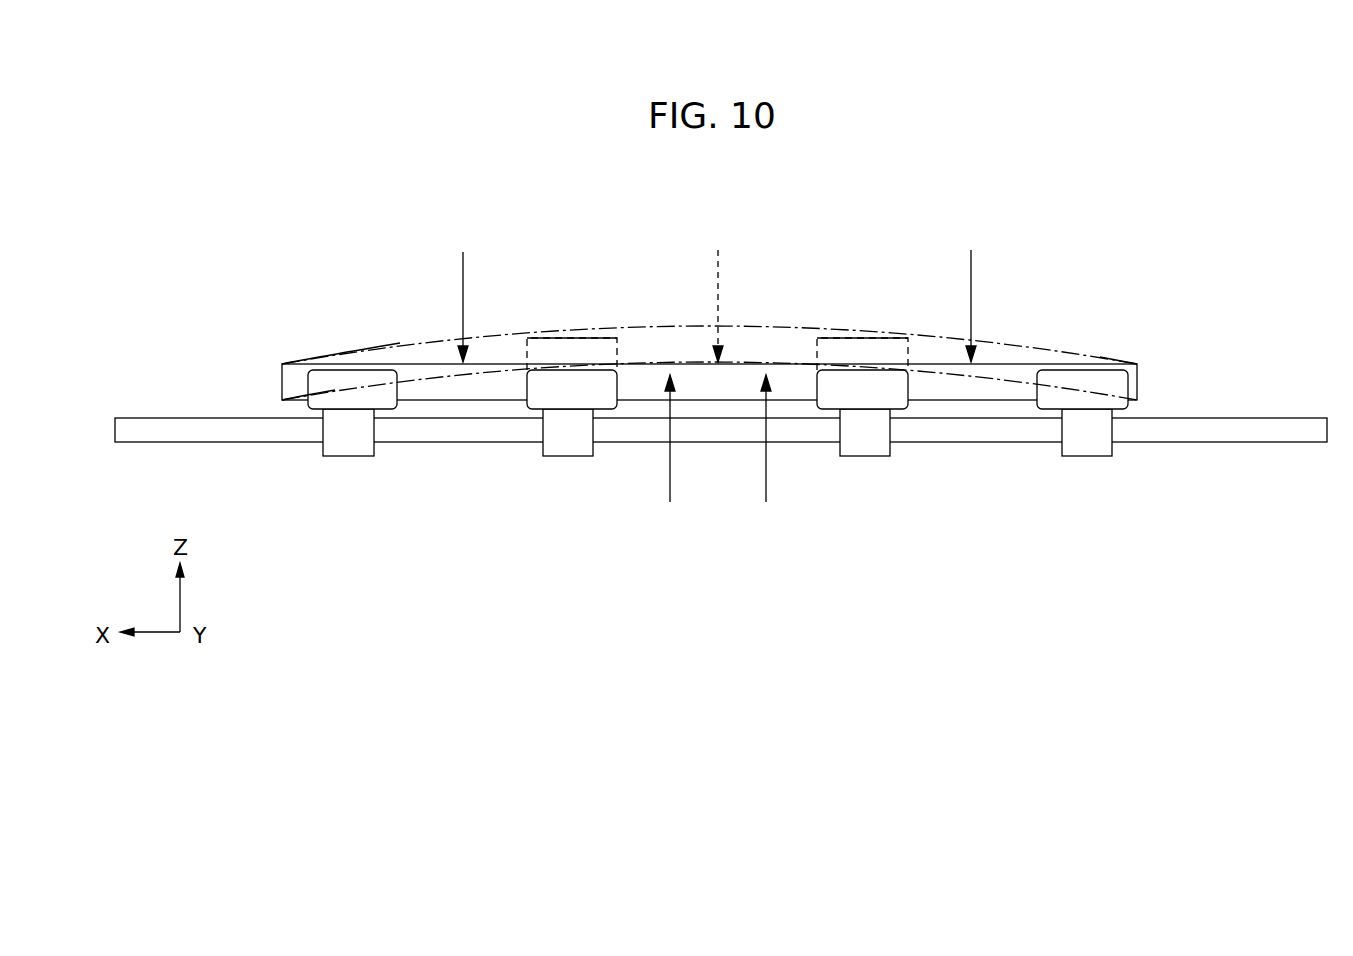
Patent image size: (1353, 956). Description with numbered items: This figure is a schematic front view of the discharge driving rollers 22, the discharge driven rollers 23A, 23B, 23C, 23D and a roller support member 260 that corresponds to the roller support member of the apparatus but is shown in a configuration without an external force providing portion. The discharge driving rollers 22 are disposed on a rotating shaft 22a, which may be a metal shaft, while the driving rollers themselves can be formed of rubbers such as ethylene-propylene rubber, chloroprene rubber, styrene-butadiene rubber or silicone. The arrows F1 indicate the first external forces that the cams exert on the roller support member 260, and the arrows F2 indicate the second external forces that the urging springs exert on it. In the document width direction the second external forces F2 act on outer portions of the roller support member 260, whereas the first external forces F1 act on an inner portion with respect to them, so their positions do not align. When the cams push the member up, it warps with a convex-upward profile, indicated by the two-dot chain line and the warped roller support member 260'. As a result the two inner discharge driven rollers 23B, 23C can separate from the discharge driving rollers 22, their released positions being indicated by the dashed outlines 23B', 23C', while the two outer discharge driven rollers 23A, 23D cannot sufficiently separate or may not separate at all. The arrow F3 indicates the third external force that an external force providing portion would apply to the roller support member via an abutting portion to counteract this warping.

The roller support member 260 is at (709, 280).
The warped roller support member 260' is at (709, 312).
The discharge driving rollers 22 is at (348, 445).
The rotating shaft 22a is at (1173, 431).
The discharge driven roller 23A is at (332, 382).
The discharge driven roller 23B is at (528, 457).
The discharge driven roller 23C is at (906, 457).
The discharge driven roller 23D is at (1108, 378).
The raised second pad position 23B' is at (575, 294).
The raised third pad position 23C' is at (862, 294).
The first external forces F1 is at (717, 459).
The second external forces F2 is at (719, 290).
The third external force F3 is at (720, 290).